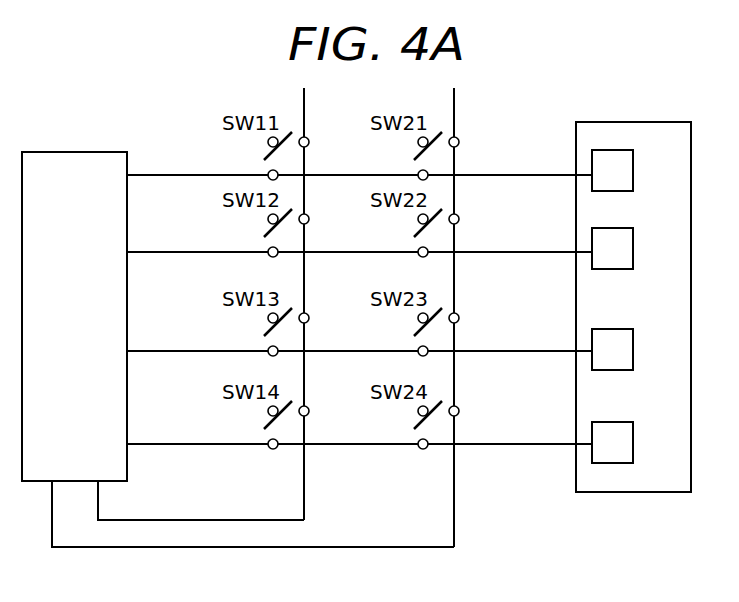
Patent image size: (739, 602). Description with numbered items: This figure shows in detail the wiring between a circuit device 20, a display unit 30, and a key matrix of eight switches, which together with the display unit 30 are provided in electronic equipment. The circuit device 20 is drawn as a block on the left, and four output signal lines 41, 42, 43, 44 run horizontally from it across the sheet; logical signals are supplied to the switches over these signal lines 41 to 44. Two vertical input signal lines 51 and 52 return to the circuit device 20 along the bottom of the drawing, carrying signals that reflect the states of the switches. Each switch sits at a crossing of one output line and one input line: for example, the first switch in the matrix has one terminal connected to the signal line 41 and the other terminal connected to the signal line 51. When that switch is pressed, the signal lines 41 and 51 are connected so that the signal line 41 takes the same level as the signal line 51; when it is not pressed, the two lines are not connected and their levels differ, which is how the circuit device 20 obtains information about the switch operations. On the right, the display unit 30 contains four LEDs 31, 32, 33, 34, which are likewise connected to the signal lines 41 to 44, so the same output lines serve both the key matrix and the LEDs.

The circuit device 20 is at (88, 151).
The display unit 30 is at (637, 121).
The LED 31 is at (634, 166).
The LED 32 is at (634, 244).
The LED 33 is at (634, 343).
The LED 34 is at (634, 435).
The signal line 41 is at (170, 174).
The signal line 42 is at (170, 251).
The signal line 43 is at (170, 350).
The signal line 44 is at (170, 443).
The signal line 51 is at (213, 519).
The signal line 52 is at (386, 546).